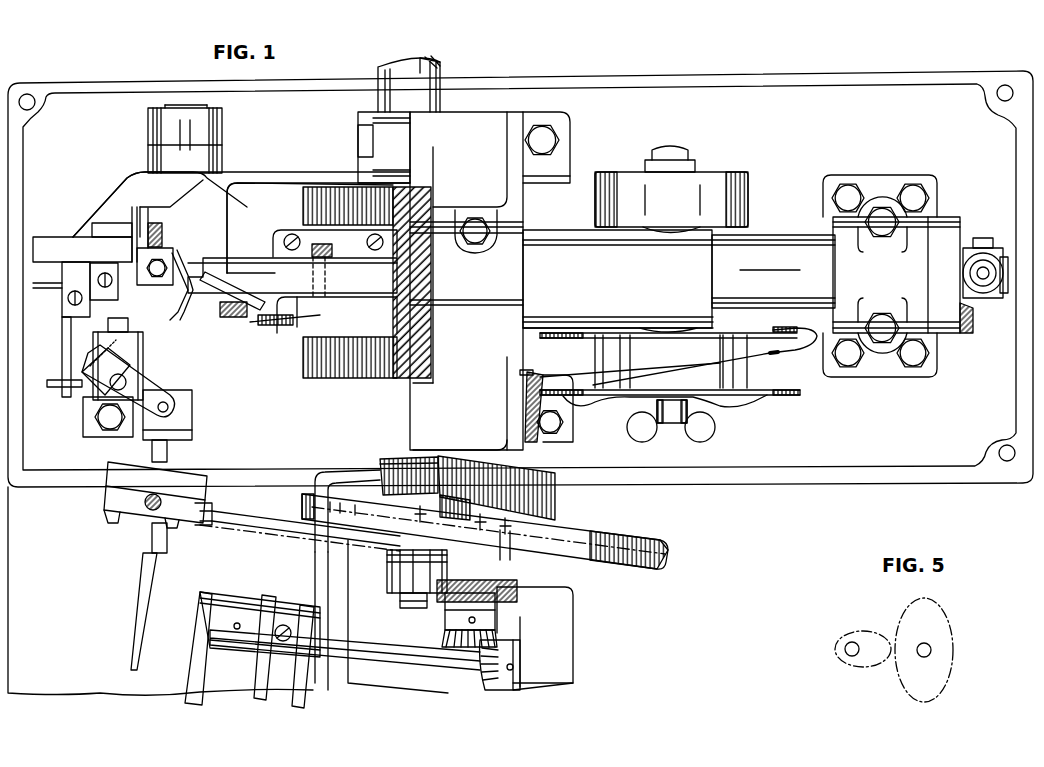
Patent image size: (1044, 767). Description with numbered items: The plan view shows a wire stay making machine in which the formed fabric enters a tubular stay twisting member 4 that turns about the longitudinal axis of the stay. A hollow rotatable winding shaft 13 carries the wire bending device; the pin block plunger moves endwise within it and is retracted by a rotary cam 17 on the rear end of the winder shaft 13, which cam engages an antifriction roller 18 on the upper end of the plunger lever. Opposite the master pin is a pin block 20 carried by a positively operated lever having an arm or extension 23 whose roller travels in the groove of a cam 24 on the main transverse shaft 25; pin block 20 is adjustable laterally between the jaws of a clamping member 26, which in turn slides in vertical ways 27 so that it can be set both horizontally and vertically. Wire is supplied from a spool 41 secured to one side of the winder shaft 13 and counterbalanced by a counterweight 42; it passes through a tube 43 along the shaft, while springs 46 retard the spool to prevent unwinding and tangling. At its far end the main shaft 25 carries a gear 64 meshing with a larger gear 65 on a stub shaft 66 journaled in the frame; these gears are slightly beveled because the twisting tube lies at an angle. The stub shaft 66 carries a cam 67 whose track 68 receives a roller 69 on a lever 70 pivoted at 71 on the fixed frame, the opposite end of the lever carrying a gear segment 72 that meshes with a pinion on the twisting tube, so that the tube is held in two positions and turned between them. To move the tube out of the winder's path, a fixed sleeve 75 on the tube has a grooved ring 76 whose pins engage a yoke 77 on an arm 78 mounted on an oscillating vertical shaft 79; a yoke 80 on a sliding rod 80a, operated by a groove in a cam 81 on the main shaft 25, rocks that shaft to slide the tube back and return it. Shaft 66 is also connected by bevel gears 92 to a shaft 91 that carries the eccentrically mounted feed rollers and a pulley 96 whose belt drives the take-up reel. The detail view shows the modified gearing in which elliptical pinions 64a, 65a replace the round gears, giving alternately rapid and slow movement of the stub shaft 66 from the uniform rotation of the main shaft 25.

In FIG. 1, the hollow rotatable winding shaft 13 is at (770, 241).
In FIG. 1, the rotary cam 17 is at (960, 333).
In FIG. 1, the roller 18 is at (1000, 252).
In FIG. 1, the pin block 20 is at (177, 265).
In FIG. 1, the arm or extension 23 is at (292, 182).
In FIG. 1, the cam 24 is at (304, 204).
In FIG. 1, the main transverse shaft 25 is at (441, 66).
In FIG. 1, the clamping member 26 is at (147, 254).
In FIG. 1, the vertical ways 27 is at (128, 234).
In FIG. 1, the spool 41 is at (645, 358).
In FIG. 1, the counterweight 42 is at (733, 170).
In FIG. 1, the tube 43 is at (802, 352).
In FIG. 1, the springs 46 is at (740, 410).
In FIG. 1, the gear 64 is at (379, 465).
In FIG. 1, the larger gear 65 is at (553, 500).
In FIG. 1, the stub shaft 66 is at (530, 371).
In FIG. 1, the cam 67 is at (662, 544).
In FIG. 1, the cam track 68 is at (618, 566).
In FIG. 1, the roller 69 is at (523, 540).
In FIG. 1, the lever 70 is at (254, 521).
In FIG. 1, the pivot 71 is at (410, 558).
In FIG. 1, the gear segment 72 is at (203, 503).
In FIG. 1, the fixed sleeve 75 is at (180, 432).
In FIG. 1, the ring 76 is at (190, 413).
In FIG. 1, the yoke 77 is at (182, 400).
In FIG. 1, the arm 78 is at (132, 377).
In FIG. 1, the oscillating vertical shaft 79 is at (100, 402).
In FIG. 1, the yoke 80 is at (88, 428).
In FIG. 1, the sliding rod 80a is at (292, 379).
In FIG. 1, the cam 81 is at (345, 377).
In FIG. 1, the shaft 91 is at (345, 658).
In FIG. 1, the bevel gears 92 is at (444, 634).
In FIG. 1, the pulley 96 is at (318, 615).
In FIG. 1, the tubular stay twisting member 4 is at (157, 451).
In FIG. 5, the elliptical pinion 64a is at (867, 660).
In FIG. 5, the elliptical pinion 65a is at (945, 638).